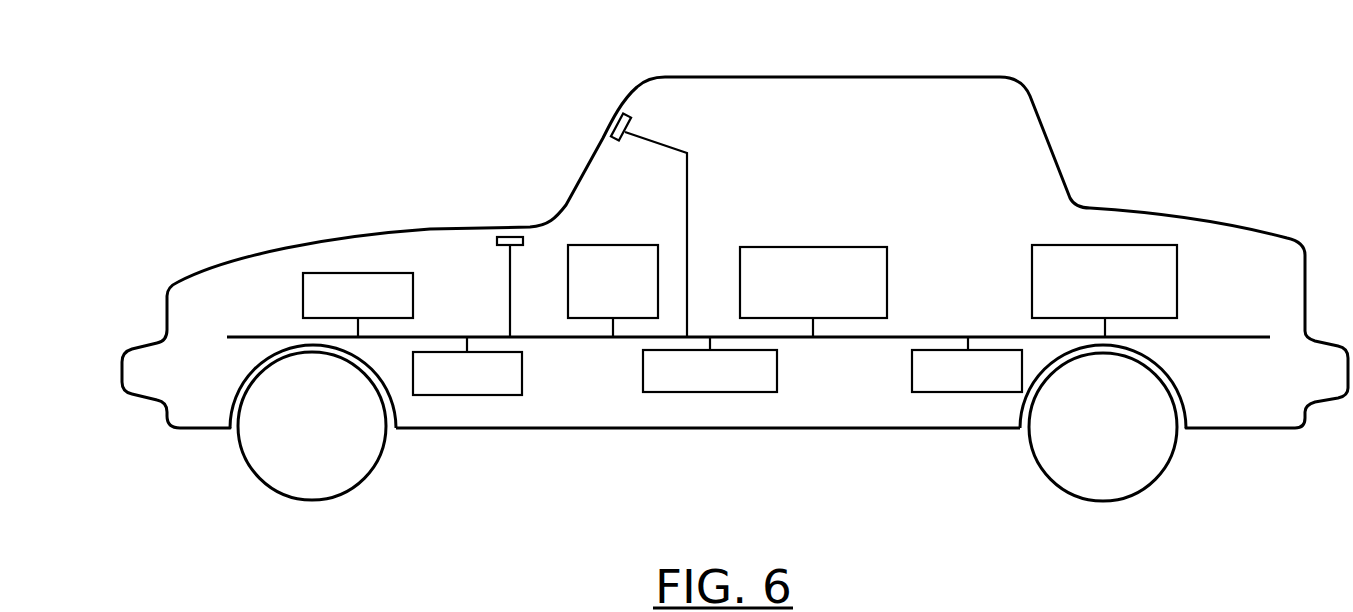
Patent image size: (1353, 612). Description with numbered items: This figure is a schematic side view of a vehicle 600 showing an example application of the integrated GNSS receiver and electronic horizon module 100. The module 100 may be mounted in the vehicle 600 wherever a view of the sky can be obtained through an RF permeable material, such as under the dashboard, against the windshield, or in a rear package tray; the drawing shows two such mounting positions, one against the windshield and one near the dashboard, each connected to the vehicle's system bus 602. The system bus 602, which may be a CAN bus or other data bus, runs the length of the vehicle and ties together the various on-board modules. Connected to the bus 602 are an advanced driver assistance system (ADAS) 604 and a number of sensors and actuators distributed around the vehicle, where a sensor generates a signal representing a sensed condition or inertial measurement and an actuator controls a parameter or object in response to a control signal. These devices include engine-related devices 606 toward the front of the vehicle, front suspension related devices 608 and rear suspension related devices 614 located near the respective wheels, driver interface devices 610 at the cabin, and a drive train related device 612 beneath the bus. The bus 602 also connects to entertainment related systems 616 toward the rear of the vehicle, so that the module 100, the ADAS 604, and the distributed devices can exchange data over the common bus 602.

The integrated GNSS receiver and electronic horizon module 100 is at (628, 127).
The vehicle 600 is at (714, 77).
The system bus 602 is at (280, 336).
The advanced driver assistance system (ADAS) 604 is at (807, 246).
The engine-related devices 606 is at (352, 272).
The front suspension related devices 608 is at (478, 395).
The driver interface devices 610 is at (607, 244).
The drive train related device 612 is at (725, 392).
The rear suspension related devices 614 is at (962, 392).
The entertainment related systems 616 is at (1093, 245).